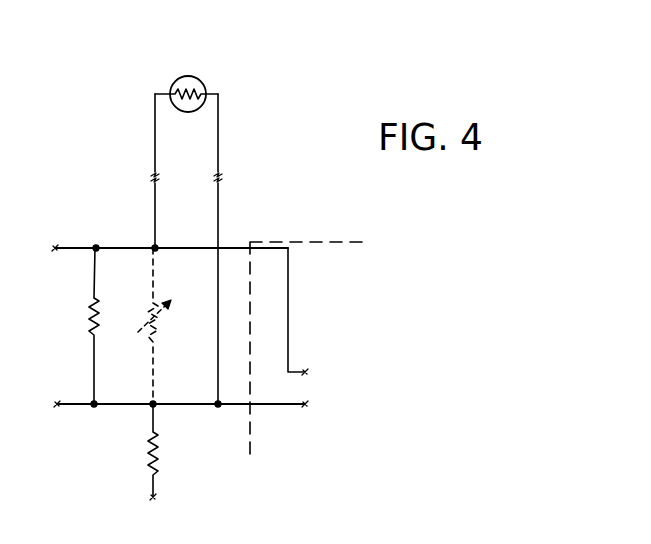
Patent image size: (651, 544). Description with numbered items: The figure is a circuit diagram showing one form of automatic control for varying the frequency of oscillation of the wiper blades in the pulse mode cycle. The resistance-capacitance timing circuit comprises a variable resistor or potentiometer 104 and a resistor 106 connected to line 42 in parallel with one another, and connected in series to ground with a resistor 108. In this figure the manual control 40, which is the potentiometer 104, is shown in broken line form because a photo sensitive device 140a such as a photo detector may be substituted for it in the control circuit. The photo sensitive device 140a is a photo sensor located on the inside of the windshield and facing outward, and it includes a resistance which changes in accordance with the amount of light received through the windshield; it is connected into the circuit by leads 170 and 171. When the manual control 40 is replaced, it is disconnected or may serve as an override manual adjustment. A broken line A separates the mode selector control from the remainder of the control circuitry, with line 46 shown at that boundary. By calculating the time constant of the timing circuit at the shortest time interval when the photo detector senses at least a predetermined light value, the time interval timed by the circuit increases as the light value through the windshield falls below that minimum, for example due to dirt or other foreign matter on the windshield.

The manual control 40 is at (140, 323).
The sensing element in probe 140a is at (188, 76).
The line 42 is at (72, 247).
The output line 46 is at (289, 312).
The variable resistor or potentiometer 104 is at (163, 345).
The resistor 106 is at (92, 312).
The resistor 108 is at (151, 453).
The lead 170 is at (154, 215).
The lead 171 is at (218, 210).
The broken line A is at (323, 242).